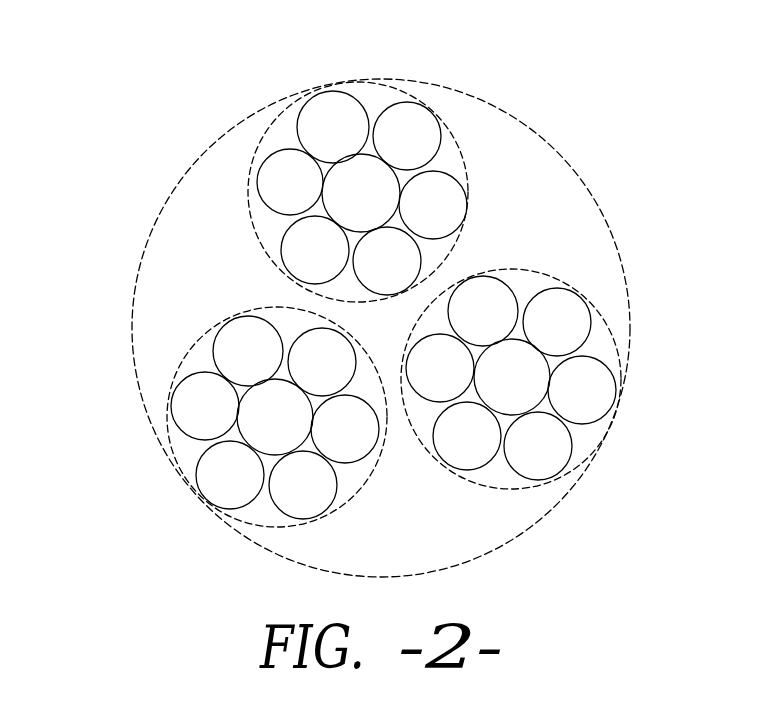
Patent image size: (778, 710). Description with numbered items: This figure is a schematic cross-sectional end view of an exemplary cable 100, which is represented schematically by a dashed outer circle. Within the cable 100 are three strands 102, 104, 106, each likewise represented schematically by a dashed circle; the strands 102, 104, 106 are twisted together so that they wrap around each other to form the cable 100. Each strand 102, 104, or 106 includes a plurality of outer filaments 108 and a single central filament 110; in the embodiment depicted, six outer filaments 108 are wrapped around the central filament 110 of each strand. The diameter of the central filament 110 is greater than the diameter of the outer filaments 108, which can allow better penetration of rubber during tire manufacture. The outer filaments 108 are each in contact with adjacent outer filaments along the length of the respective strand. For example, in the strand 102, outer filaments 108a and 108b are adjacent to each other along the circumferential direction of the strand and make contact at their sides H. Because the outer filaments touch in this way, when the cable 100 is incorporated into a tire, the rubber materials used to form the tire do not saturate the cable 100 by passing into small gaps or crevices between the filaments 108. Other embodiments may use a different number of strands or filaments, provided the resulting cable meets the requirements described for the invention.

The cable 100 is at (613, 149).
The strand 102 is at (187, 355).
The strand 104 is at (448, 140).
The strand 106 is at (527, 487).
The outer filament 108 is at (328, 108).
The outer filament 108a is at (190, 405).
The outer filament 108b is at (222, 502).
The central filament 110 is at (363, 183).
The sides H is at (188, 448).